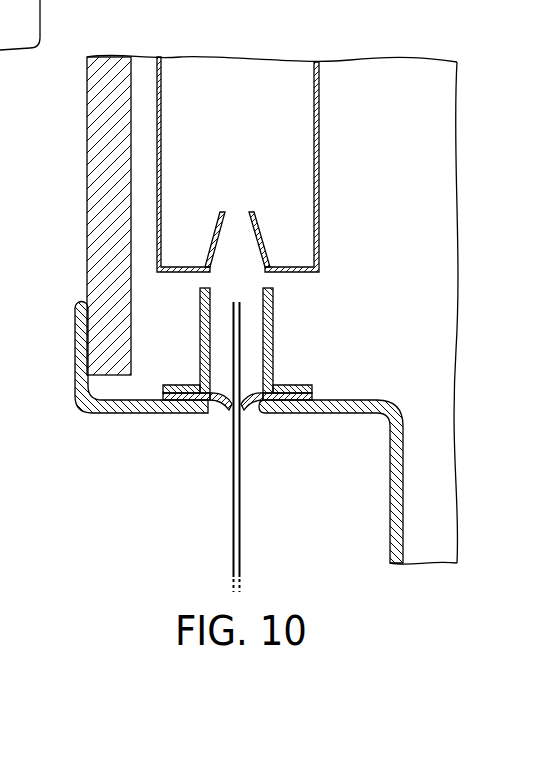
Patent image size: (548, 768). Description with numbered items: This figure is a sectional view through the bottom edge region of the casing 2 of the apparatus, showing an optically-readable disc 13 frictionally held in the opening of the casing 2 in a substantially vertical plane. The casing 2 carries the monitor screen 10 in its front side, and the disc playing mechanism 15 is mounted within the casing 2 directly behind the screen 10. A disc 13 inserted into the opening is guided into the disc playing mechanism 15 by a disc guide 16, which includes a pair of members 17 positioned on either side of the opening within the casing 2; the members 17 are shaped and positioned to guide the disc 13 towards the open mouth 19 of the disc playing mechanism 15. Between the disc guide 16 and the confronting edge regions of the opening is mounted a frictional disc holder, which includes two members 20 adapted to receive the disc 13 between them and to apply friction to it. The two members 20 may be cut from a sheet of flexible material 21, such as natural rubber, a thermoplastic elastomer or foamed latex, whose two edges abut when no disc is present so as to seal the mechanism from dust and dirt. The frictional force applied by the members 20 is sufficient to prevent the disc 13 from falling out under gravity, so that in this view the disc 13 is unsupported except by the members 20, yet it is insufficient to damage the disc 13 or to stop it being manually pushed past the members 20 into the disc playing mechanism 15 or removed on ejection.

The casing 2 is at (390, 492).
The monitor screen 10 is at (87, 196).
The optically-readable disc 13 is at (233, 536).
The disc playing mechanism 15 is at (276, 164).
The disc guide 16 is at (275, 366).
The members of the disc guide 17 is at (200, 311).
The open mouth 19 is at (250, 218).
The members of the frictional disc holder 20 is at (222, 411).
The sheet of flexible material 21 is at (297, 413).